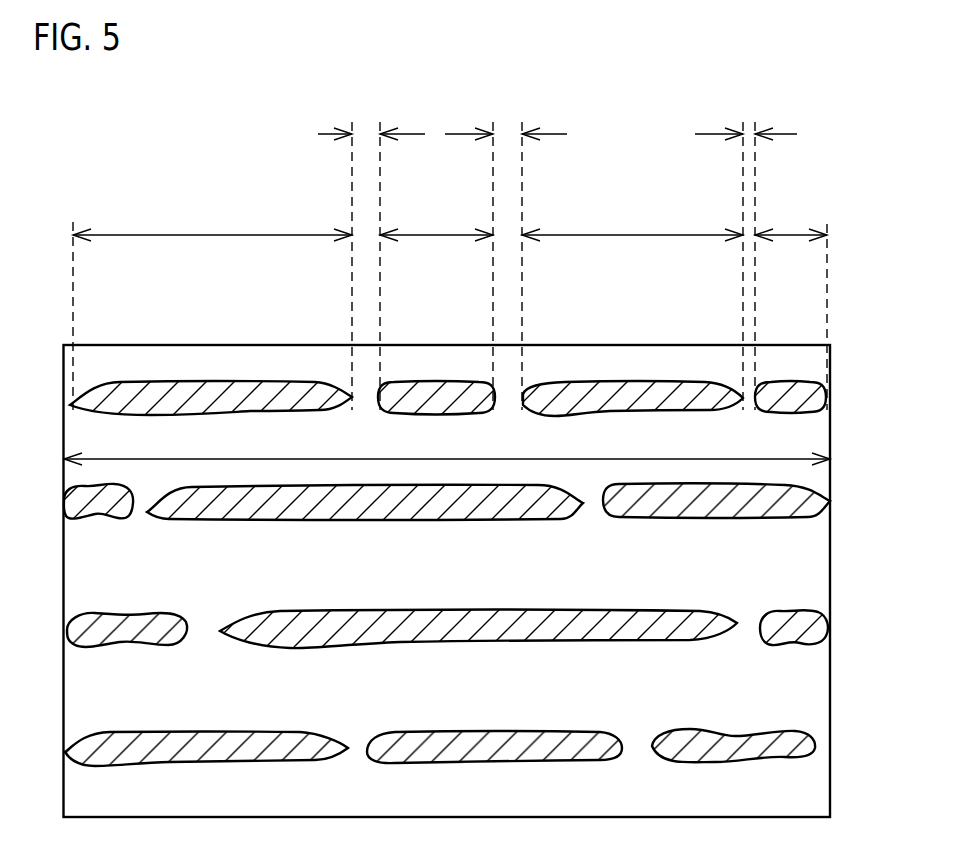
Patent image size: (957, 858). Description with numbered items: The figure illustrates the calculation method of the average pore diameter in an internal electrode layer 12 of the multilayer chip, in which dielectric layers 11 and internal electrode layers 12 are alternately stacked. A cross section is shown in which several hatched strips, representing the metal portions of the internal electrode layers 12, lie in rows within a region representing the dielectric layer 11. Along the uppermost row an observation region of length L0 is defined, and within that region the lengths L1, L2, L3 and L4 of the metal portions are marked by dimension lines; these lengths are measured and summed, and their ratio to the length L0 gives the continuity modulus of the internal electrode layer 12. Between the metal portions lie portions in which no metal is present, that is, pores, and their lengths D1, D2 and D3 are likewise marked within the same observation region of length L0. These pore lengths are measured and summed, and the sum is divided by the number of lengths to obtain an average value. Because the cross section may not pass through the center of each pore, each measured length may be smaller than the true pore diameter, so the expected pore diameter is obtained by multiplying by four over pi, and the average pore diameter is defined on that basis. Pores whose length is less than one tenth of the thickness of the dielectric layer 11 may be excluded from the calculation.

The dielectric layer 11 is at (808, 562).
The internal electrode layer 12 is at (810, 398).
The length of observation region L0 is at (447, 444).
The length of metal portion L1 is at (212, 216).
The length of metal portion L2 is at (436, 216).
The length of metal portion L3 is at (632, 216).
The length of metal portion L4 is at (791, 216).
The length of pore portion D1 is at (371, 112).
The length of pore portion D2 is at (506, 112).
The length of pore portion D3 is at (746, 112).